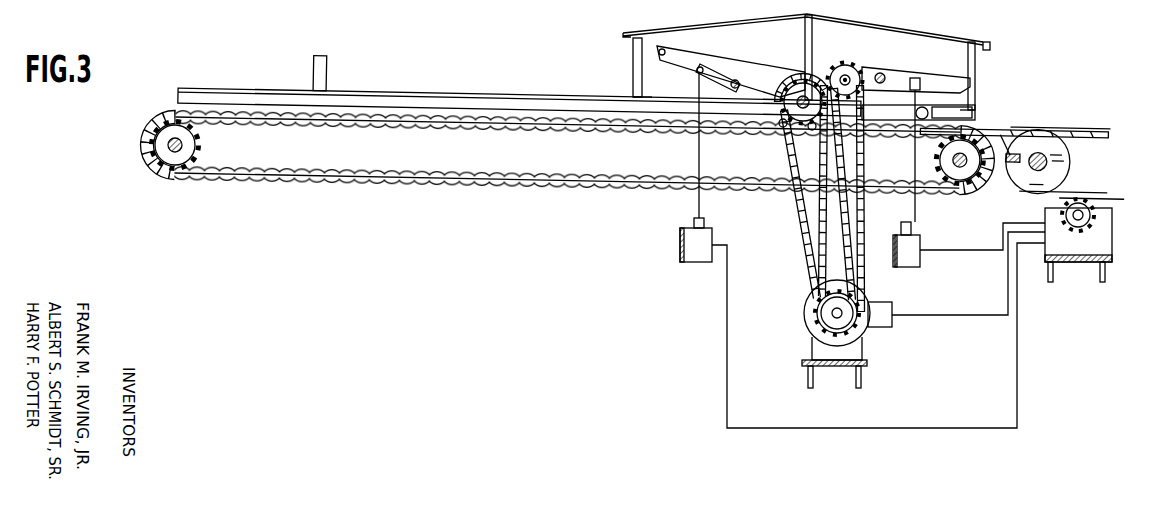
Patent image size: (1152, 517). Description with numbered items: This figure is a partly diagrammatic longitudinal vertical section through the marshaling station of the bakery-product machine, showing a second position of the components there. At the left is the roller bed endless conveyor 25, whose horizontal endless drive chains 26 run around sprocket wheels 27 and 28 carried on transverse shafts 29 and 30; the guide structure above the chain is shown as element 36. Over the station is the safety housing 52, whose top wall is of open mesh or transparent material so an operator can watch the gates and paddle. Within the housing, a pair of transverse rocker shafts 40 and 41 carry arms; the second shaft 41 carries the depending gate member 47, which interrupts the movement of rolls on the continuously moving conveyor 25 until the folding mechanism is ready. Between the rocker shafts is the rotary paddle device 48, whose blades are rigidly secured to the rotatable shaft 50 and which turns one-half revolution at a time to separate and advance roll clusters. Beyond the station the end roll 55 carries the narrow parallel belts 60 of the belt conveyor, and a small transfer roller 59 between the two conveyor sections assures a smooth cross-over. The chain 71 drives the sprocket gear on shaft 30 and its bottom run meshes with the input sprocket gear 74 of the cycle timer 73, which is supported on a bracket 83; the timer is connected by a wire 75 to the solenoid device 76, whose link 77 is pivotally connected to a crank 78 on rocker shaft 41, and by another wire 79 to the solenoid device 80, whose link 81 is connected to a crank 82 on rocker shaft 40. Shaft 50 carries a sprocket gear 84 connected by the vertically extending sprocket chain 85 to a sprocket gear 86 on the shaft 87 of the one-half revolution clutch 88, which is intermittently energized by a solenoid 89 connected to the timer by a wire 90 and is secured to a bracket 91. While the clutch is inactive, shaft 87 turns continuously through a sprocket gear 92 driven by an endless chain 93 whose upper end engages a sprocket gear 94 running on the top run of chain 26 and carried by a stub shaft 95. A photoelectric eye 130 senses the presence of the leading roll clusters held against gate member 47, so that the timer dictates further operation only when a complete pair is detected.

The roller bed endless conveyor 25 is at (448, 110).
The endless drive chains 26 is at (396, 108).
The sprocket wheel 27 is at (181, 157).
The sprocket wheel 28 is at (968, 135).
The transverse shaft 29 is at (168, 152).
The transverse shaft 30 is at (960, 155).
The guide rail 36 is at (510, 90).
The rocker shaft 40 is at (742, 82).
The rocker shaft 41 is at (881, 73).
The gate member 47 is at (975, 100).
The rotary paddle device 48 is at (812, 82).
The rotatable shaft 50 is at (847, 68).
The housing 52 is at (776, 40).
The end roll 55 is at (1072, 147).
The transfer roller 59 is at (1012, 118).
The belts 60 is at (1092, 110).
The chain 71 is at (1073, 113).
The cycle timer 73 is at (1078, 262).
The input sprocket gear 74 is at (1110, 240).
The wire 75 is at (970, 251).
The solenoid device 76 is at (905, 262).
The link 77 is at (912, 158).
The crank 78 is at (903, 85).
The wire 79 is at (930, 427).
The solenoid device 80 is at (697, 265).
The link 81 is at (697, 160).
The crank 82 is at (720, 68).
The bracket 83 is at (1102, 284).
The sprocket gear 84 is at (823, 75).
The sprocket chain 85 is at (864, 212).
The sprocket gear 86 is at (815, 286).
The shaft 87 is at (828, 315).
The one-half revolution clutch 88 is at (865, 340).
The solenoid 89 is at (890, 324).
The wire 90 is at (985, 316).
The bracket 91 is at (832, 378).
The sprocket gear 92 is at (833, 320).
The endless chain 93 is at (793, 215).
The sprocket gear 94 is at (812, 130).
The stub shaft 95 is at (781, 126).
The photoelectric eye 130 is at (925, 107).